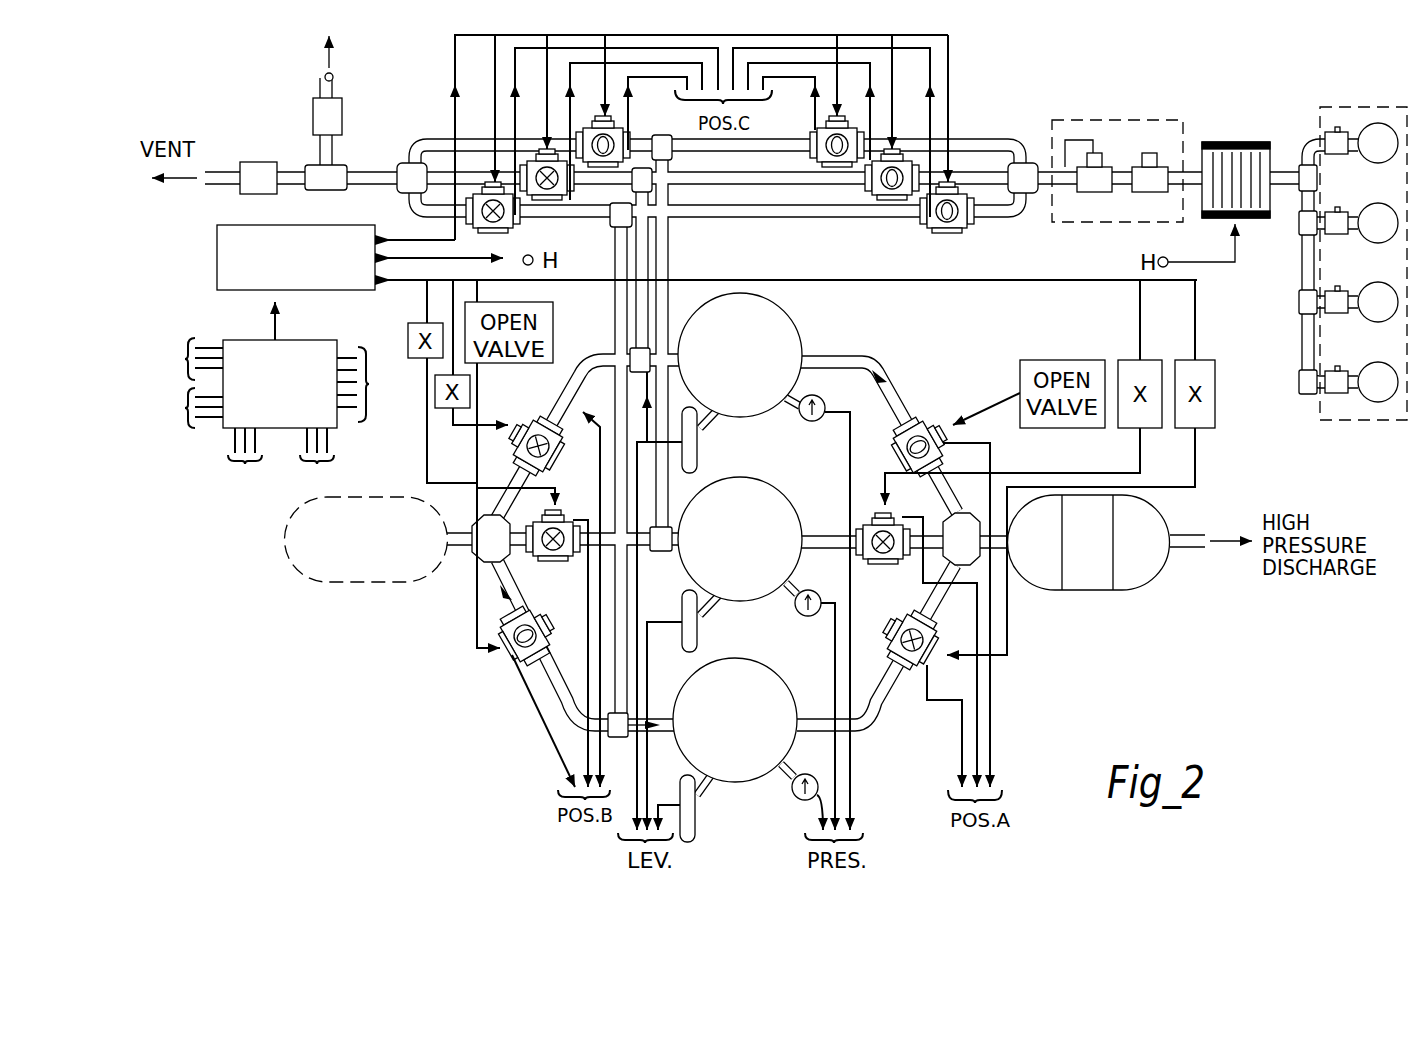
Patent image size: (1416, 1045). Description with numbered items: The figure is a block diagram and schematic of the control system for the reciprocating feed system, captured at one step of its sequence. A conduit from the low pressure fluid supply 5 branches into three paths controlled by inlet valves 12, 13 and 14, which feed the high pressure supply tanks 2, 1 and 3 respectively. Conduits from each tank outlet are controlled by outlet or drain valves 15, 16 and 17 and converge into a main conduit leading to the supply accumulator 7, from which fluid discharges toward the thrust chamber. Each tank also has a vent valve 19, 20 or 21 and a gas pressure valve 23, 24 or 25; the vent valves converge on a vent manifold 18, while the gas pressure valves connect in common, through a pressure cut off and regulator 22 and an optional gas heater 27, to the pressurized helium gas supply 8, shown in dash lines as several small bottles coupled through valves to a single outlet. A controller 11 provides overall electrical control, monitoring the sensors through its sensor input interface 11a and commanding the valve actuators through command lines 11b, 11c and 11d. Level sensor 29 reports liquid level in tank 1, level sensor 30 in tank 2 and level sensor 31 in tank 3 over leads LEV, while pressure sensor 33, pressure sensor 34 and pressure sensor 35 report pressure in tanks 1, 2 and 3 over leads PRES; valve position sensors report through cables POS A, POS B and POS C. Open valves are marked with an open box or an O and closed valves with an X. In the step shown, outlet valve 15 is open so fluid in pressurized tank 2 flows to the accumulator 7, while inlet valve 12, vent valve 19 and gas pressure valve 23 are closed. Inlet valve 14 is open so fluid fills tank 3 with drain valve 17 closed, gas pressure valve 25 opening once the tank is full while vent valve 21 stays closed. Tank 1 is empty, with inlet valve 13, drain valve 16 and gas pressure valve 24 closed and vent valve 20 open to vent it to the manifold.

The high pressure supply tank 1 is at (728, 553).
The high pressure supply tank 2 is at (727, 370).
The high pressure supply tank 3 is at (722, 735).
The low pressure fluid supply 5 is at (287, 545).
The supply accumulator 7 is at (1078, 559).
The pressurized helium gas supply 8 is at (1314, 131).
The controller 11 is at (217, 240).
The sensor input interface 11a is at (262, 340).
The command line 11b is at (398, 237).
The command line 11c is at (562, 282).
The command line 11d is at (410, 282).
The inlet valve 12 is at (556, 460).
The inlet valve 13 is at (549, 563).
The inlet valve 14 is at (510, 672).
The outlet valve 15 is at (930, 431).
The outlet valve 16 is at (893, 564).
The outlet valve 17 is at (895, 641).
The vent manifold 18 is at (312, 113).
The vent valve 19 is at (557, 205).
The vent valve 20 is at (627, 136).
The vent valve 21 is at (506, 229).
The pressure cut off and regulator 22 is at (1103, 120).
The gas pressure valve 23 is at (893, 202).
The gas pressure valve 24 is at (822, 133).
The gas pressure valve 25 is at (956, 234).
The gas heater 27 is at (1257, 139).
The level sensor 29 is at (698, 650).
The level sensor 30 is at (700, 468).
The level sensor 31 is at (695, 838).
The pressure sensor 33 is at (808, 618).
The pressure sensor 34 is at (815, 424).
The pressure sensor 35 is at (797, 798).